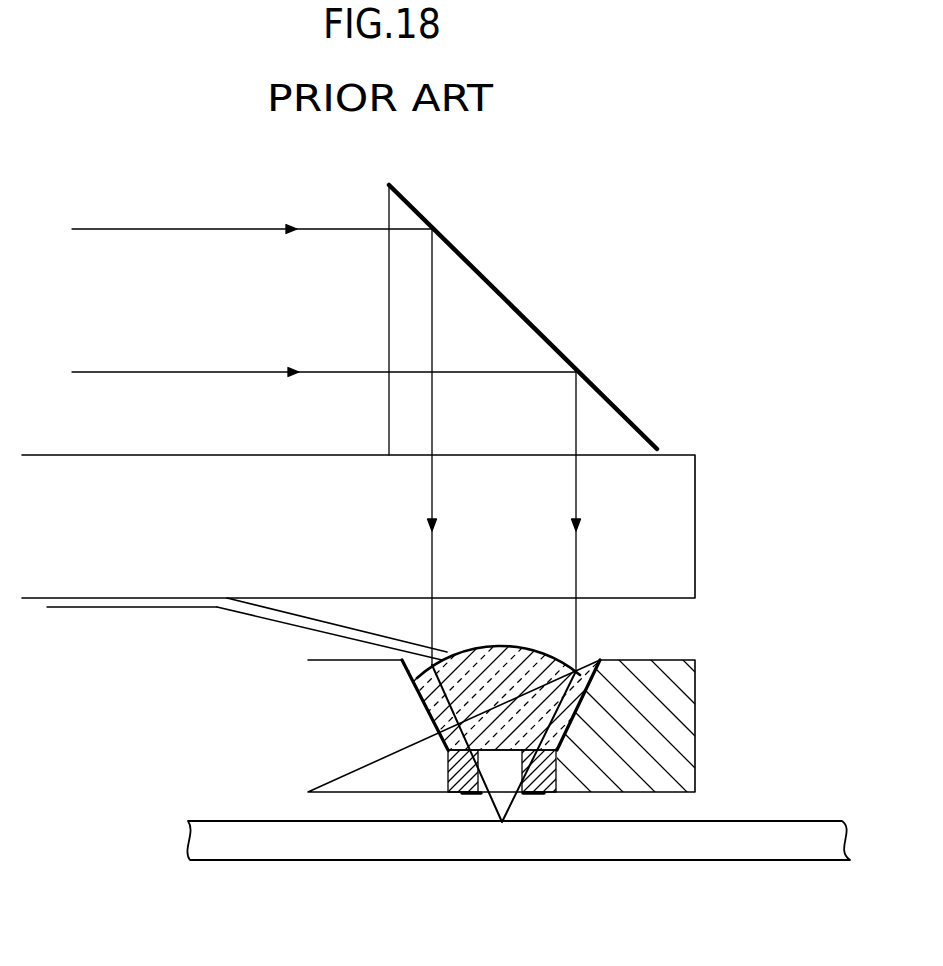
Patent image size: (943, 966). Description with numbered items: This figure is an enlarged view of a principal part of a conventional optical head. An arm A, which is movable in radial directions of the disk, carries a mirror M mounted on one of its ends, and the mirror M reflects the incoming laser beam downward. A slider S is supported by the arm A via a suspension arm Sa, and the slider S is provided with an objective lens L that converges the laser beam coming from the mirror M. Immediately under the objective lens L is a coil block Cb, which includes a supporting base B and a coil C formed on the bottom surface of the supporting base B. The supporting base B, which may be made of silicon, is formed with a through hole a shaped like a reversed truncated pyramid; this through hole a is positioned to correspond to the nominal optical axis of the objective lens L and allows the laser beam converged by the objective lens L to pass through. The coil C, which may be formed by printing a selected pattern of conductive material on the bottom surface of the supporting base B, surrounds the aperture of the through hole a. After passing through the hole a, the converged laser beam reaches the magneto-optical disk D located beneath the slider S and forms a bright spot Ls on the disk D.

The mirror M is at (522, 312).
The arm A is at (130, 563).
The suspension arm Sa is at (252, 617).
The objective lens L is at (540, 650).
The slider S is at (695, 700).
The magneto-optical disk D is at (740, 818).
The coil block Cb is at (448, 783).
The supporting base B is at (556, 783).
The coil C is at (500, 788).
The through hole a is at (470, 797).
The bright spot Ls is at (501, 822).